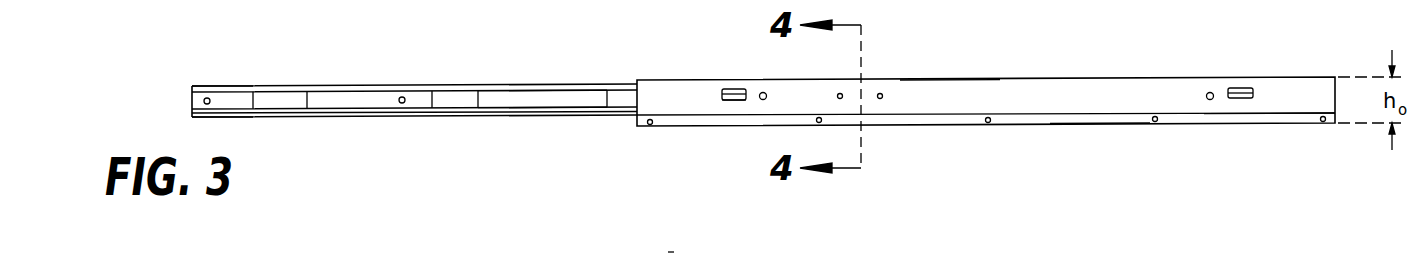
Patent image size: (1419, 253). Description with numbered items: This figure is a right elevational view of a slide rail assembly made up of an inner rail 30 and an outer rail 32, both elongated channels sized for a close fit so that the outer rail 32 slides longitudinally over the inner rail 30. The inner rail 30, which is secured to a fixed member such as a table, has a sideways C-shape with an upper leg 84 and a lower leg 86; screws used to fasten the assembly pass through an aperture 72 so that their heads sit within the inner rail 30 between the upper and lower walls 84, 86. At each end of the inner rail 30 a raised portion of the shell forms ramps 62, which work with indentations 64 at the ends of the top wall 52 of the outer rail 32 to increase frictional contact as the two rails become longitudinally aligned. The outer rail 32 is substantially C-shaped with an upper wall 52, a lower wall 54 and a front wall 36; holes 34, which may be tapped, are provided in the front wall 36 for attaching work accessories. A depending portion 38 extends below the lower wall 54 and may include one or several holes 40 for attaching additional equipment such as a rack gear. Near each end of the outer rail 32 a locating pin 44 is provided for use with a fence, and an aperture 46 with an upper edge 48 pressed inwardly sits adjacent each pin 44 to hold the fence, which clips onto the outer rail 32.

The inner rail 30 is at (285, 91).
The outer rail 32 is at (1000, 78).
The holes 34 is at (884, 95).
The front wall 36 is at (942, 103).
The depending portion 38 is at (1089, 121).
The holes 40 is at (989, 123).
The locating pin 44 is at (763, 92).
The aperture 46 is at (730, 101).
The upper edge 48 is at (735, 87).
The upper wall 52 is at (1162, 77).
The lower wall 54 is at (1204, 114).
The ramps 62 is at (218, 85).
The indentations 64 is at (710, 249).
The aperture 72 is at (402, 104).
The upper leg 84 is at (545, 85).
The lower leg 86 is at (530, 108).